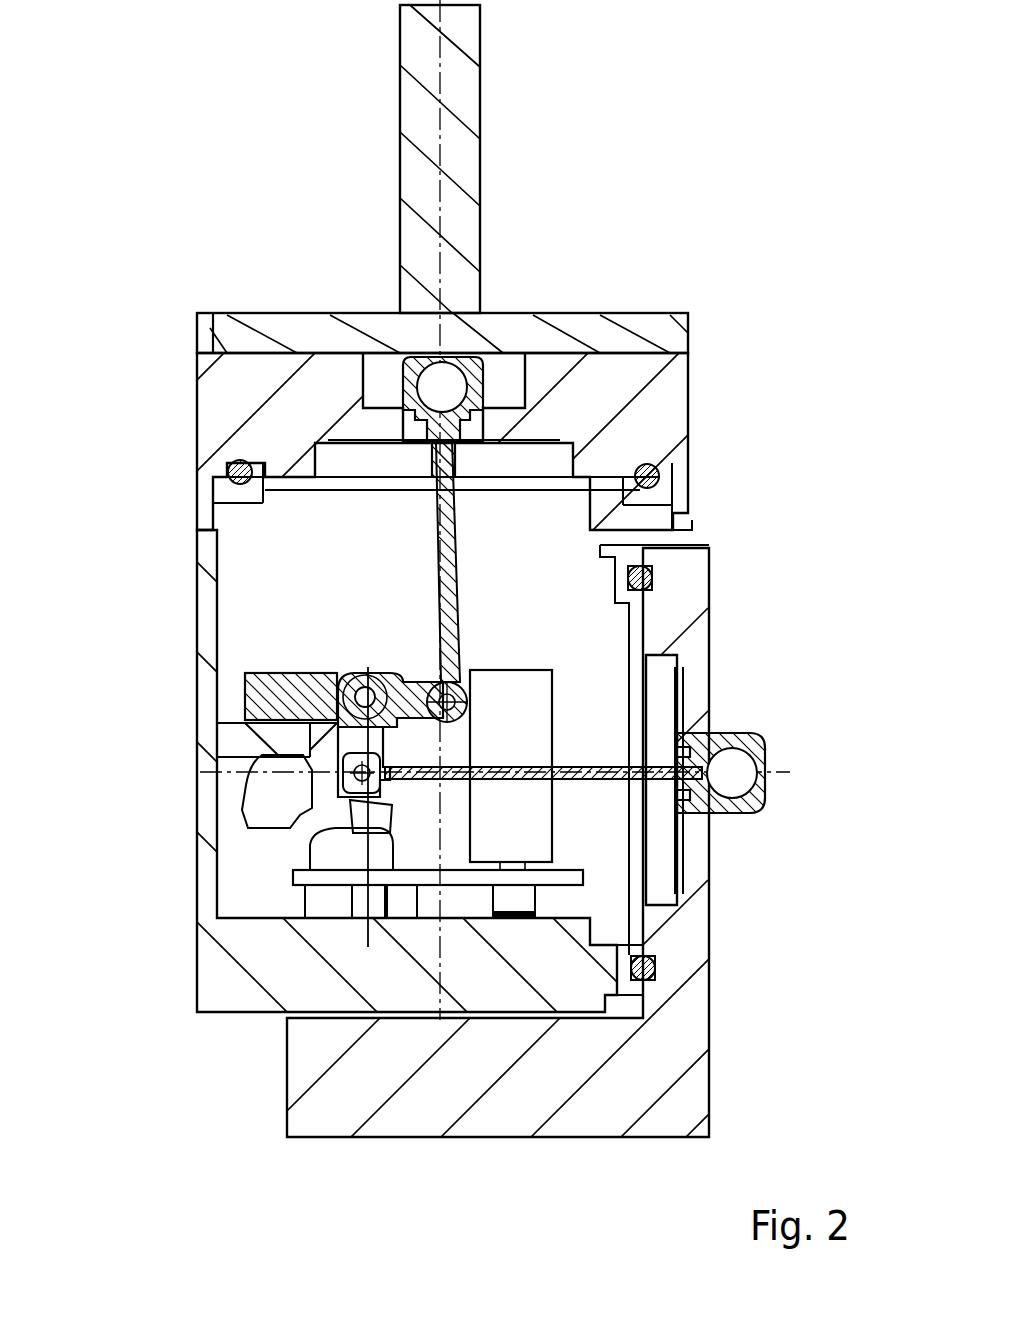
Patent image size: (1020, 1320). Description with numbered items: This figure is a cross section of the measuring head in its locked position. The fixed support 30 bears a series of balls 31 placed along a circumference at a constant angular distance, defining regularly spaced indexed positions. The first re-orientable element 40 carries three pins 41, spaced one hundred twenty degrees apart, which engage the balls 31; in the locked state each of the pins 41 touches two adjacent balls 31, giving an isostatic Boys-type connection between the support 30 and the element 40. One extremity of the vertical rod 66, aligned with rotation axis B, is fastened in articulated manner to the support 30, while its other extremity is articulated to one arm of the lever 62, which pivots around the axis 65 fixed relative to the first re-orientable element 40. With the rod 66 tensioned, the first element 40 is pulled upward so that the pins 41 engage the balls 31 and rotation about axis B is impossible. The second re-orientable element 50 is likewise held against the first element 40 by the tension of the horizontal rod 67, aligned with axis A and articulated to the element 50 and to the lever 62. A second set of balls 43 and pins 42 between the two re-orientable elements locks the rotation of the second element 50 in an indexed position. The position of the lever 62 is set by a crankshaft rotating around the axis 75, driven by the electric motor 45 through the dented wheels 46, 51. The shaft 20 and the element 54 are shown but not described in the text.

The shaft 20 is at (462, 92).
The support 30 is at (668, 400).
The balls 31 is at (660, 476).
The first re-orientable element 40 is at (235, 985).
The pins 41 is at (230, 495).
The pins 42 is at (622, 565).
The balls 43 is at (655, 965).
The electric motor 45 is at (505, 695).
The dented wheel 46 is at (575, 878).
The second re-orientable element 50 is at (690, 1040).
The dented wheel 51 is at (305, 878).
The cap 54 is at (330, 862).
The lever 62 is at (270, 792).
The axis 65 is at (358, 675).
The vertical rod 66 is at (438, 598).
The horizontal rod 67 is at (605, 765).
The axis 75 is at (368, 939).